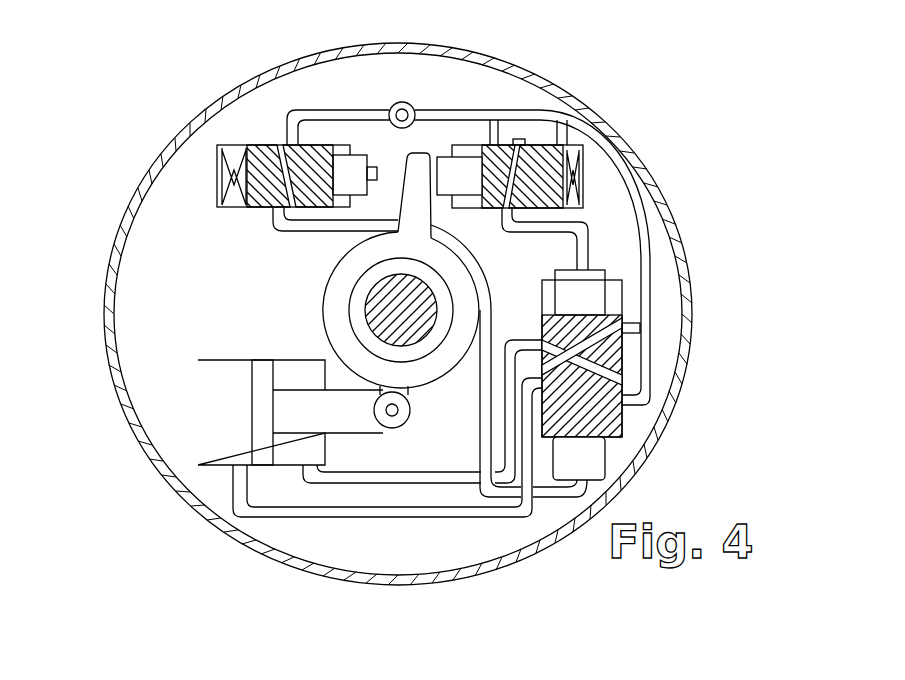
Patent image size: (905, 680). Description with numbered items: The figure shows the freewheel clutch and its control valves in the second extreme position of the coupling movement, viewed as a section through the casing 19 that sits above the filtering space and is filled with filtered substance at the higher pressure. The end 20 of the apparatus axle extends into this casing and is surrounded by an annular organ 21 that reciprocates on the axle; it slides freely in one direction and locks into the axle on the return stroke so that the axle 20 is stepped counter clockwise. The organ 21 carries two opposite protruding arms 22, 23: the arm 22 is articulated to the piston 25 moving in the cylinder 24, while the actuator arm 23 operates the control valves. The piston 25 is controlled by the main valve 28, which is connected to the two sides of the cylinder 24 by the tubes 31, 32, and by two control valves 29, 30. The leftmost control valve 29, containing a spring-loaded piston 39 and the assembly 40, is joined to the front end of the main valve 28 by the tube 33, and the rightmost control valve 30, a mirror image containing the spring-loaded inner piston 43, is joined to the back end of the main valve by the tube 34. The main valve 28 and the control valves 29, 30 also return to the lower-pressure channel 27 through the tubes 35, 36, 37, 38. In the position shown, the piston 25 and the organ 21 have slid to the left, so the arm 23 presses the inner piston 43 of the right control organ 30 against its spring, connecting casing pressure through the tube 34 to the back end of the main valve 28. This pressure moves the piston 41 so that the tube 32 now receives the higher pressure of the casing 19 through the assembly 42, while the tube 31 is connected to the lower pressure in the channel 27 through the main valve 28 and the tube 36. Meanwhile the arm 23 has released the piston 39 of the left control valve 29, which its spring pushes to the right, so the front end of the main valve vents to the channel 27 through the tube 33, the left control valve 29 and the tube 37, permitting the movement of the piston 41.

The casing 19 is at (134, 188).
The end of the axle 20 is at (378, 292).
The organ 21 is at (330, 295).
The arm 22 is at (412, 417).
The arm 23 is at (420, 163).
The cylinder 24 is at (215, 358).
The piston 25 is at (256, 380).
The channel 27 is at (402, 102).
The main valve 28 is at (606, 452).
The control valve 29 is at (227, 145).
The control valve 30 is at (583, 145).
The tube 31 is at (323, 467).
The tube 32 is at (247, 513).
The tube 33 is at (535, 498).
The tube 34 is at (585, 230).
The tube 35 is at (650, 387).
The tube 36 is at (622, 318).
The tube 37 is at (325, 110).
The tube 38 is at (500, 133).
The piston 39 is at (250, 157).
The assembly 40 is at (258, 145).
The piston of the main valve 41 is at (625, 432).
The assembly 42 is at (605, 357).
The inner piston 43 is at (583, 205).